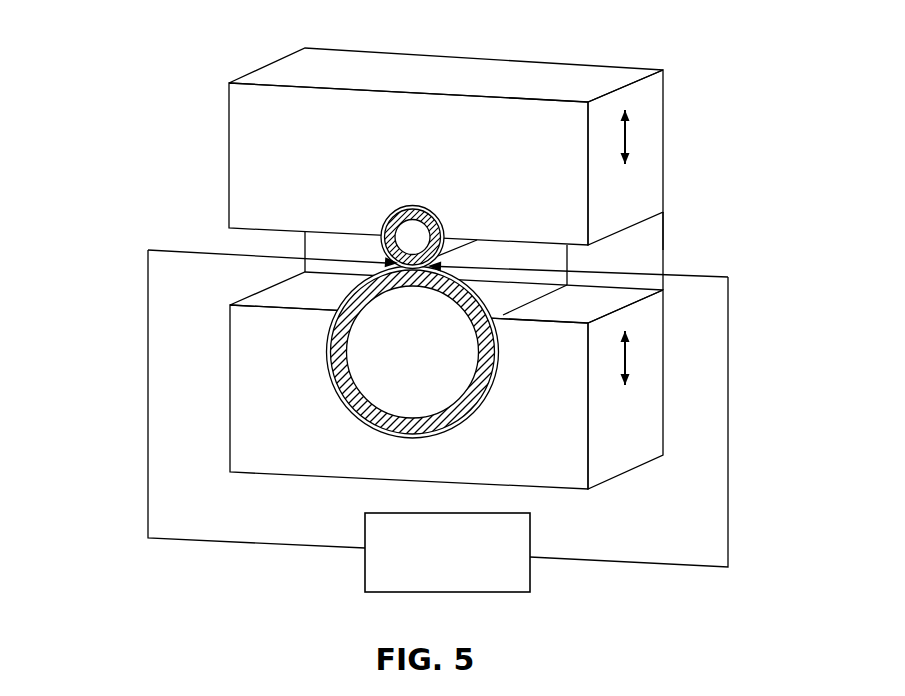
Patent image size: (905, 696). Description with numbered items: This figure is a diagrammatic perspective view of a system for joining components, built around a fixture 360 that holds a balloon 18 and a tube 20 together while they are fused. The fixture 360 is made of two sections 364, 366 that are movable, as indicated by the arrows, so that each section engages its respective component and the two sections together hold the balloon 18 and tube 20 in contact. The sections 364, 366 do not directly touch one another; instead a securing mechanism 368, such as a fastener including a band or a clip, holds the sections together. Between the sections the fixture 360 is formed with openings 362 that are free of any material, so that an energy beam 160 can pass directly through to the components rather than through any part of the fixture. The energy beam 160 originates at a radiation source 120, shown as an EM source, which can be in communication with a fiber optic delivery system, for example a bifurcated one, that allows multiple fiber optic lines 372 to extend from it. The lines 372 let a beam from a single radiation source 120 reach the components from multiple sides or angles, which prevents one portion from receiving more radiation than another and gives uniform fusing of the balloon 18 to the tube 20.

The fixture 360 is at (238, 42).
The section 364 is at (229, 152).
The section 366 is at (540, 490).
The securing mechanism 368 is at (665, 230).
The balloon 18 is at (372, 403).
The tube 20 is at (410, 180).
The opening 362 is at (224, 280).
The energy beam 160 is at (217, 250).
The fiber optic line 372 is at (147, 448).
The radiation source 120 is at (458, 592).